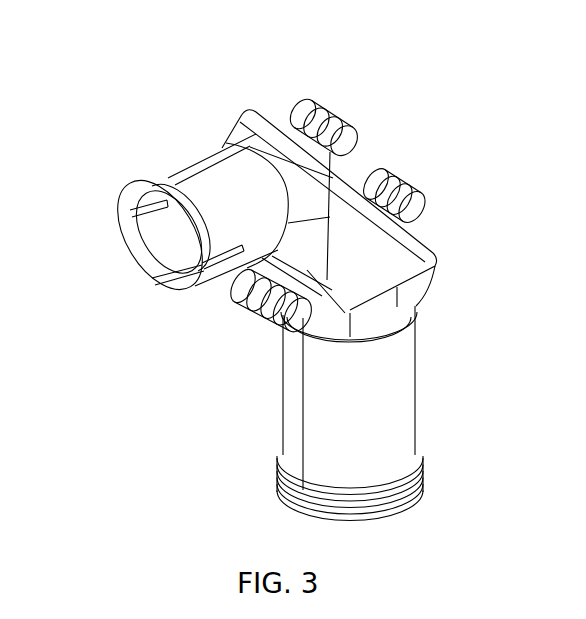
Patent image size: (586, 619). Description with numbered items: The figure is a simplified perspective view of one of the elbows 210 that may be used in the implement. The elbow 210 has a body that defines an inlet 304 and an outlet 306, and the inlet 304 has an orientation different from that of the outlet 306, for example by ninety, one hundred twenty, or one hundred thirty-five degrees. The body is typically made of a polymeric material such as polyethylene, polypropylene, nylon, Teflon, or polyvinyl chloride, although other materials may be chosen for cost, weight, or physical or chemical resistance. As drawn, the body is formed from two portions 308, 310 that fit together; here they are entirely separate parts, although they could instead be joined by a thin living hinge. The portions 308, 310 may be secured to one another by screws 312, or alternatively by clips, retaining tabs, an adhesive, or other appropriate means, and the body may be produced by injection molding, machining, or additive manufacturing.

The elbow 210 is at (135, 113).
The inlet 304 is at (150, 278).
The outlet 306 is at (393, 507).
The portion 308 is at (295, 427).
The portion 310 is at (400, 440).
The screws 312 is at (420, 210).